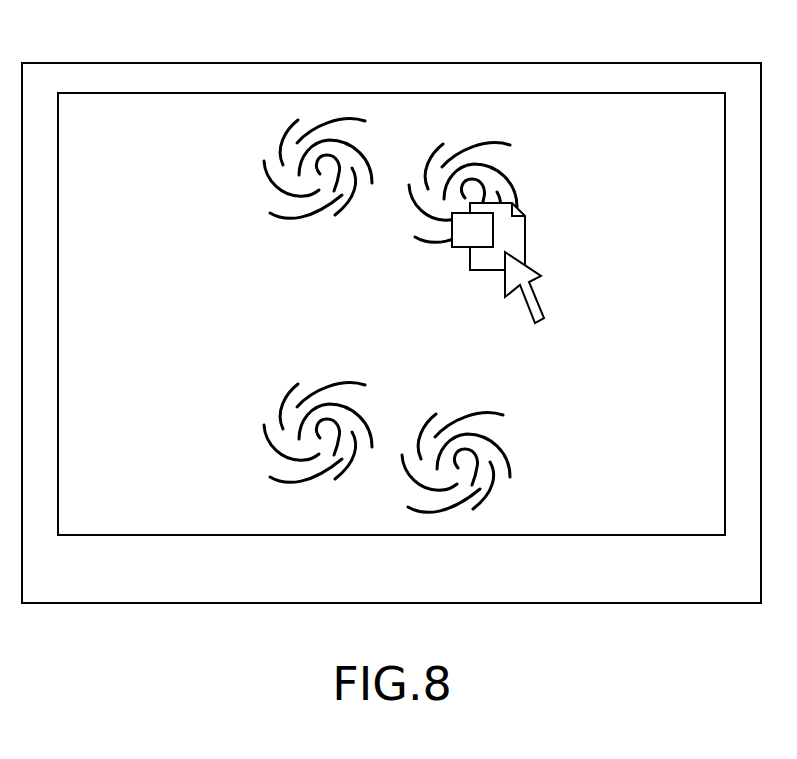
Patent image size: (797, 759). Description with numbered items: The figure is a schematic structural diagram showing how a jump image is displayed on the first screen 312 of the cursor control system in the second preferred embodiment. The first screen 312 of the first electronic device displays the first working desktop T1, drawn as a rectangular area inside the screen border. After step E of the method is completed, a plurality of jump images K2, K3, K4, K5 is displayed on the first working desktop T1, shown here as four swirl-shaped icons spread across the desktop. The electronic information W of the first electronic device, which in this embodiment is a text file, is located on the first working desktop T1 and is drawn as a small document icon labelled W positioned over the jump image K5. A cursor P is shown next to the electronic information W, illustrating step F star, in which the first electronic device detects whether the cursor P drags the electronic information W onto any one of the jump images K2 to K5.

The first screen 312 is at (489, 73).
The first working desktop T1 is at (602, 113).
The jump image K2 is at (280, 418).
The jump image K3 is at (278, 157).
The jump image K4 is at (510, 447).
The jump image K5 is at (510, 187).
The electronic information W is at (480, 255).
The cursor P is at (538, 288).